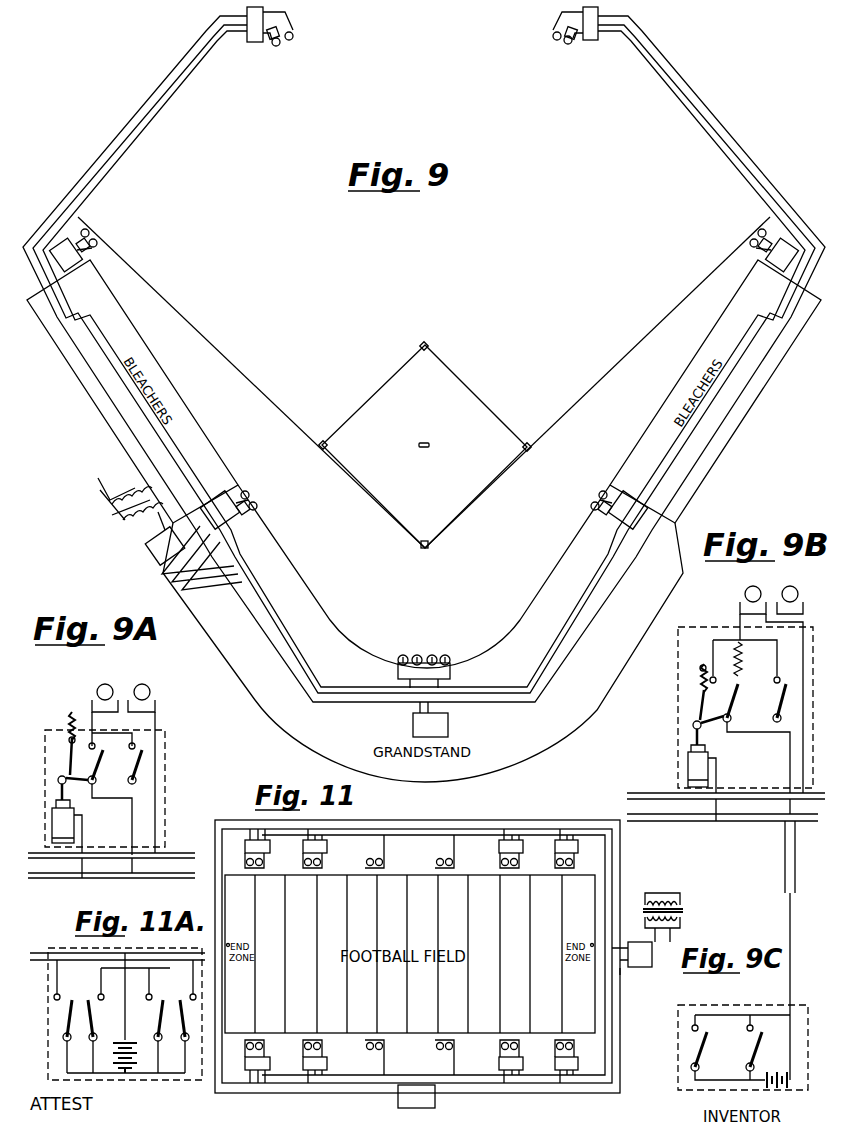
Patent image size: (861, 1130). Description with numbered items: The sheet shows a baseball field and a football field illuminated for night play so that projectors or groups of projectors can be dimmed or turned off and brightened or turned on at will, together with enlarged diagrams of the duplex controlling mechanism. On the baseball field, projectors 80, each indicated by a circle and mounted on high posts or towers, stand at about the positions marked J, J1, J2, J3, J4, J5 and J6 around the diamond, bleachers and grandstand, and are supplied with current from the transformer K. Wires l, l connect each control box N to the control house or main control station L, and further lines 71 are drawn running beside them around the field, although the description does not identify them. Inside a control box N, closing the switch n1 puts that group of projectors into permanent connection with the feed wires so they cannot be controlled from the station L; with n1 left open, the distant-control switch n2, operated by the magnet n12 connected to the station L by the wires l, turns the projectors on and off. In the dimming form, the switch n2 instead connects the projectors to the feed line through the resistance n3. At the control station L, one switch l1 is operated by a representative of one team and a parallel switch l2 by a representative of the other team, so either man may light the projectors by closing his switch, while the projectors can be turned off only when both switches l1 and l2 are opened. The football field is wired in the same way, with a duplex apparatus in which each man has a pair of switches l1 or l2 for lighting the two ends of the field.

In FIG. 9, the wires l is at (137, 110).
In FIG. 9A, the wires l is at (60, 878).
In FIG. 11, the wires l is at (236, 820).
In FIG. 9B, the wires l is at (700, 821).
In FIG. 9, the conductors / wiring channel 71 is at (147, 122).
In FIG. 9A, the conductors / wiring channel 71 is at (40, 855).
In FIG. 11, the conductors / wiring channel 71 is at (430, 829).
In FIG. 9B, the conductors / wiring channel 71 is at (636, 793).
In FIG. 9, the projectors 80 is at (291, 40).
In FIG. 9A, the projectors 80 is at (142, 684).
In FIG. 11, the projectors 80 is at (246, 863).
In FIG. 9B, the projectors 80 is at (790, 586).
In FIG. 9, the control boxes N is at (248, 40).
In FIG. 9A, the control boxes N is at (165, 778).
In FIG. 11, the control boxes N is at (303, 846).
In FIG. 9B, the control boxes N is at (678, 722).
In FIG. 9, the projector position J is at (424, 672).
In FIG. 9, the projector position J1 is at (591, 510).
In FIG. 9, the projector position J2 is at (238, 503).
In FIG. 9, the projector position J3 is at (761, 254).
In FIG. 9, the projector position J4 is at (93, 250).
In FIG. 9, the projector position J5 is at (575, 41).
In FIG. 9, the projector position J6 is at (269, 40).
In FIG. 9, the transformer K is at (110, 520).
In FIG. 11, the transformer K is at (672, 917).
In FIG. 9, the control house L is at (413, 727).
In FIG. 11A, the control house L is at (50, 1040).
In FIG. 11, the control house L is at (398, 1100).
In FIG. 9C, the control house L is at (678, 1070).
In FIG. 9A, the switch n1 is at (145, 763).
In FIG. 9B, the switch n1 is at (780, 704).
In FIG. 9A, the distant-control switch n2 is at (99, 768).
In FIG. 9B, the distant-control switch n2 is at (736, 692).
In FIG. 9B, the resistance n3 is at (742, 656).
In FIG. 9A, the magnet n12 is at (52, 820).
In FIG. 9B, the magnet n12 is at (688, 766).
In FIG. 11A, the switch l1 is at (80, 1036).
In FIG. 9C, the switch l1 is at (705, 1051).
In FIG. 11A, the switch l2 is at (171, 1036).
In FIG. 9C, the switch l2 is at (762, 1051).